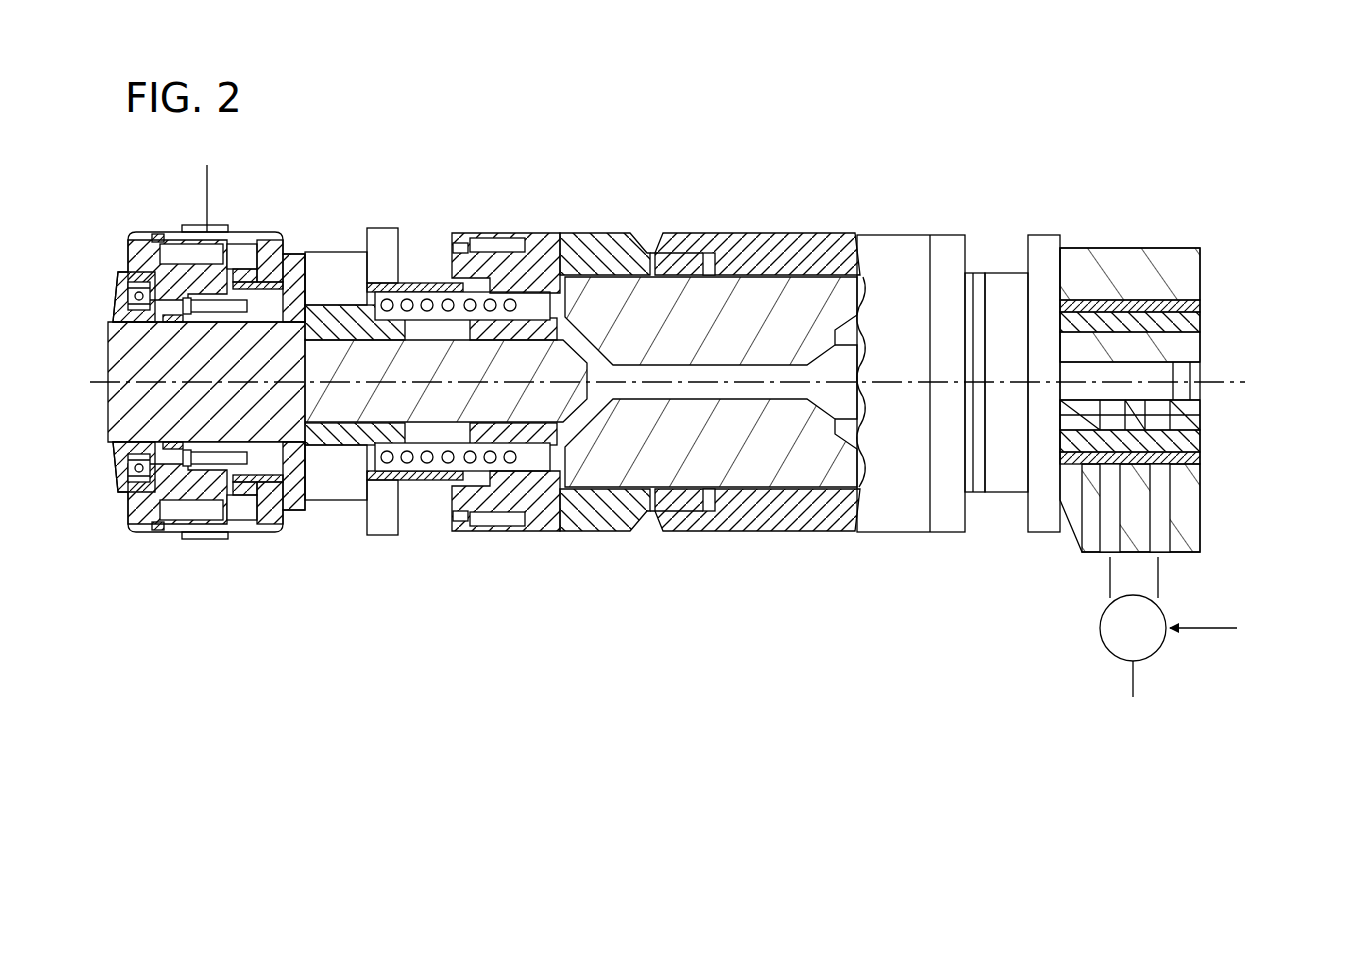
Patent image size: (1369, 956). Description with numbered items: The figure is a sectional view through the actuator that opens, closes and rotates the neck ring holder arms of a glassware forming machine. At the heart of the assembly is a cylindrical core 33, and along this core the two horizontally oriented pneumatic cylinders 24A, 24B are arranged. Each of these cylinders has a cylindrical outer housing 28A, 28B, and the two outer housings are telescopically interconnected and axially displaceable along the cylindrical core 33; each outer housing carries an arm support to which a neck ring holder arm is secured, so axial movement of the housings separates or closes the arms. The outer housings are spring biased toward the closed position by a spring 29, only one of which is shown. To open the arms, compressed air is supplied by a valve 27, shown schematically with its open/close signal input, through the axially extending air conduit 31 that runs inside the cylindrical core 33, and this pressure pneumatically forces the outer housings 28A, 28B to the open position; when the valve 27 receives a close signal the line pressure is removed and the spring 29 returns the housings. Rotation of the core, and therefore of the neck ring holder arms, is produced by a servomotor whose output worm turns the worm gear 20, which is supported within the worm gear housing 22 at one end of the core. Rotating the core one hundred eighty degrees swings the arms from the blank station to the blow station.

The worm gear 20 is at (213, 505).
The worm gear housing 22 is at (133, 255).
The pneumatic cylinder 24A is at (545, 356).
The pneumatic cylinder 24B is at (807, 361).
The valve 27 is at (1102, 618).
The cylindrical outer housing 28A is at (587, 247).
The cylindrical outer housing 28B is at (758, 250).
The spring 29 is at (493, 302).
The air conduit 31 is at (737, 392).
The cylindrical core 33 is at (610, 470).